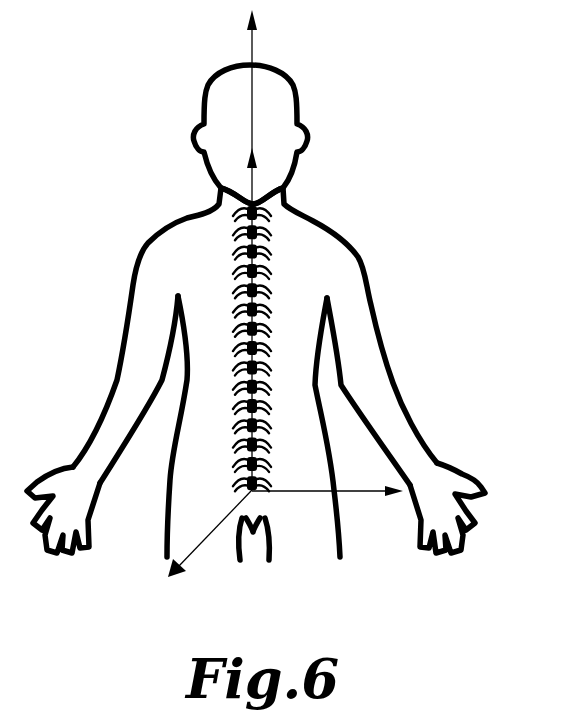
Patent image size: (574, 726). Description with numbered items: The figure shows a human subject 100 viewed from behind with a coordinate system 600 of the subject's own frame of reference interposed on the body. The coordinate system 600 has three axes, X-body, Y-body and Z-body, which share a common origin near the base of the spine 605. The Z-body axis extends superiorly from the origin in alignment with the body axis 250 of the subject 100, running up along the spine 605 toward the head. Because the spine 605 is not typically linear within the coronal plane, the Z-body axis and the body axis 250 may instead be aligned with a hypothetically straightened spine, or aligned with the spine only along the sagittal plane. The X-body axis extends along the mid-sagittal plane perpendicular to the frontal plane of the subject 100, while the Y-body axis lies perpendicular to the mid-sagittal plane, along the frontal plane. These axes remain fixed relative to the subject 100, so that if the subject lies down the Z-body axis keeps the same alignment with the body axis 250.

The subject 100 is at (361, 246).
The body axis 250 is at (247, 178).
The spine 605 is at (238, 289).
The coordinate system 600 is at (452, 296).